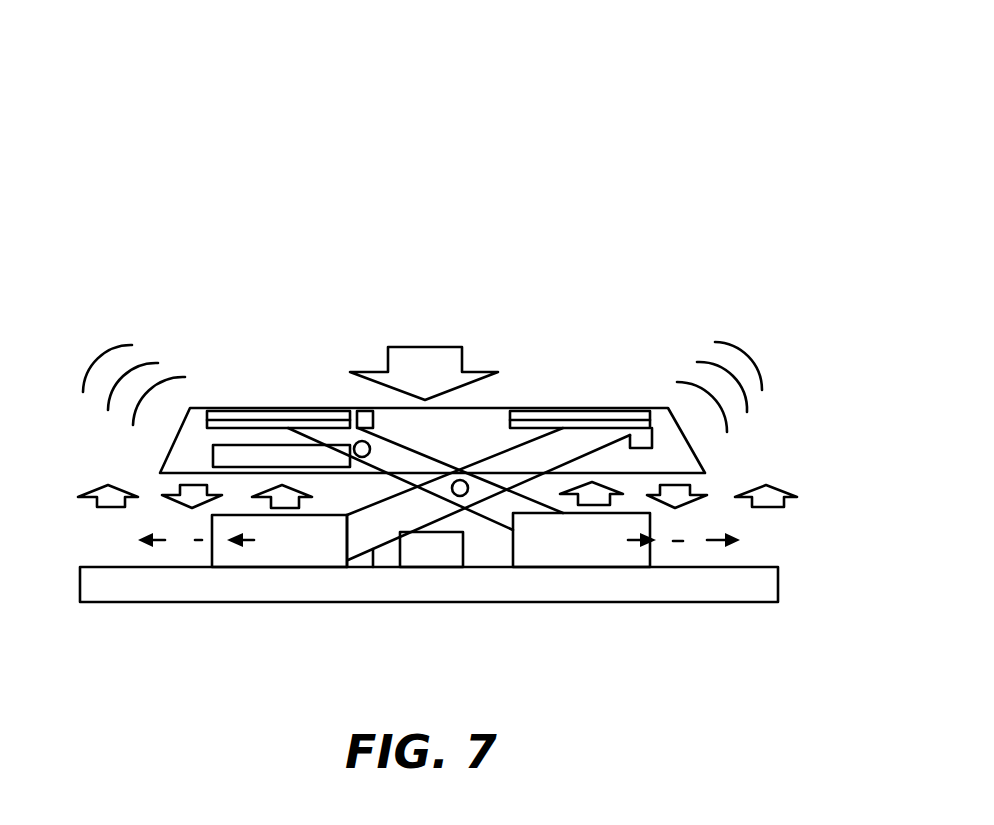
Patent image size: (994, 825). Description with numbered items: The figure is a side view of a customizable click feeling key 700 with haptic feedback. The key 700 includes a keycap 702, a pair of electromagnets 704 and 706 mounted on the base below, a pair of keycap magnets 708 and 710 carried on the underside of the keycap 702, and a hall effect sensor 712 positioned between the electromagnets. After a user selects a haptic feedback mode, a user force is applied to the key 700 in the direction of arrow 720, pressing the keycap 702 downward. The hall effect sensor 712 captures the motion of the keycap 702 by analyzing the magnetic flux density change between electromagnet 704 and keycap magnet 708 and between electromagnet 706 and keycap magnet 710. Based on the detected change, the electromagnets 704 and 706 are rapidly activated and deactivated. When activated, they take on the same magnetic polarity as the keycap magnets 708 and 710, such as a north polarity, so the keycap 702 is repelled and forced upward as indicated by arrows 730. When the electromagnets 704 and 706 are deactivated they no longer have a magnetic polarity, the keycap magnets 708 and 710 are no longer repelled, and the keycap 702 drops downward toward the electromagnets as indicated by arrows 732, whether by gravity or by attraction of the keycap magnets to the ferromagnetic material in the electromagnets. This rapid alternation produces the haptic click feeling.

The customizable click feeling key 700 is at (437, 351).
The keycap 702 is at (487, 430).
The electromagnet 704 is at (287, 555).
The electromagnet 706 is at (625, 558).
The keycap magnet 708 is at (307, 418).
The keycap magnet 710 is at (567, 417).
The hall effect sensor 712 is at (455, 548).
The arrow 720 is at (424, 356).
The arrows 730 is at (93, 500).
The arrows 732 is at (193, 502).